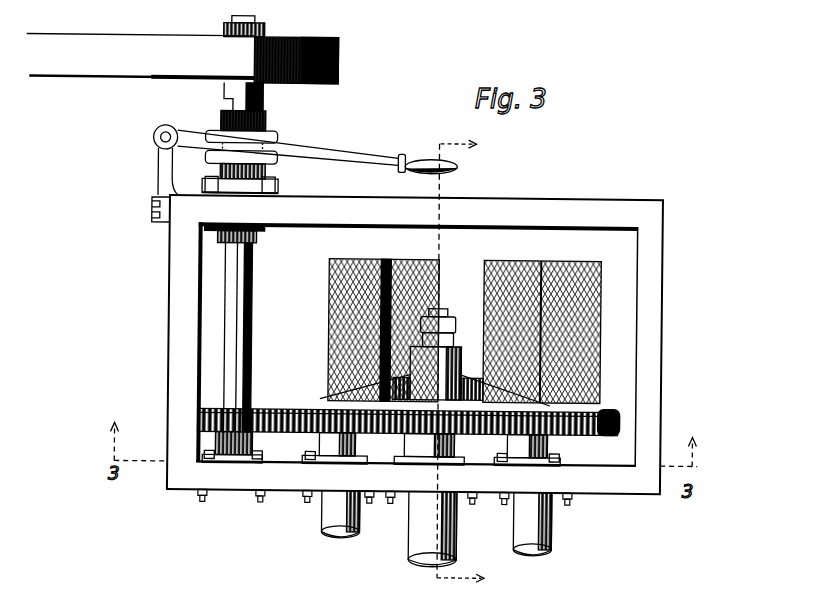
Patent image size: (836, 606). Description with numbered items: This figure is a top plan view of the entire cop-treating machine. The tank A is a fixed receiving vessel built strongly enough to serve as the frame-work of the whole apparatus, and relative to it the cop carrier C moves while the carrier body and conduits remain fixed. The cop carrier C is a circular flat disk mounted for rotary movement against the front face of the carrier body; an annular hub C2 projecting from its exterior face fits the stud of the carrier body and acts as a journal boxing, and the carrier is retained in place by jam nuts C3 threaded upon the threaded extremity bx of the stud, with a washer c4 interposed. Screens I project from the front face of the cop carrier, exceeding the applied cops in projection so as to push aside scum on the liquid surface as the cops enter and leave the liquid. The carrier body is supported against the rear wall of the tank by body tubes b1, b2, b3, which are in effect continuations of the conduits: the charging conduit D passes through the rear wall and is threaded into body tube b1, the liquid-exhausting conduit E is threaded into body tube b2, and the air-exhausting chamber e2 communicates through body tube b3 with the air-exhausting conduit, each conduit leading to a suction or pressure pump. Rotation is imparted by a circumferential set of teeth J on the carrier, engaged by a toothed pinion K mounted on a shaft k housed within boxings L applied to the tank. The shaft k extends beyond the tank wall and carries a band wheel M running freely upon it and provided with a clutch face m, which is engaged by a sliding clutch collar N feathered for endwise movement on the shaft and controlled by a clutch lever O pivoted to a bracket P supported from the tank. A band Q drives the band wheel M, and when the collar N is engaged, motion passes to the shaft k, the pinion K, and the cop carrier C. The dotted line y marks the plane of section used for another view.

The tank A is at (663, 283).
The band Q is at (140, 55).
The band wheel M is at (179, 34).
The clutch face m is at (262, 98).
The sliding clutch collar N is at (278, 138).
The clutch lever O is at (386, 166).
The bracket P is at (157, 172).
The boxings L is at (262, 237).
The shaft k is at (253, 302).
The screens I is at (385, 257).
The cop carrier C is at (258, 408).
The annular hub C2 is at (436, 374).
The jam nuts C3 is at (458, 325).
The washer c4 is at (462, 350).
The threaded extremity bx is at (442, 316).
The toothed pinion K is at (200, 420).
The circumferential set of teeth J is at (623, 423).
The body tube b2 is at (330, 445).
The body tube b1 is at (429, 449).
The body tube b3 is at (545, 450).
The liquid-exhausting conduit E is at (327, 532).
The charging conduit D is at (462, 530).
The air-exhausting chamber e2 is at (555, 537).
The section line y is at (450, 360).